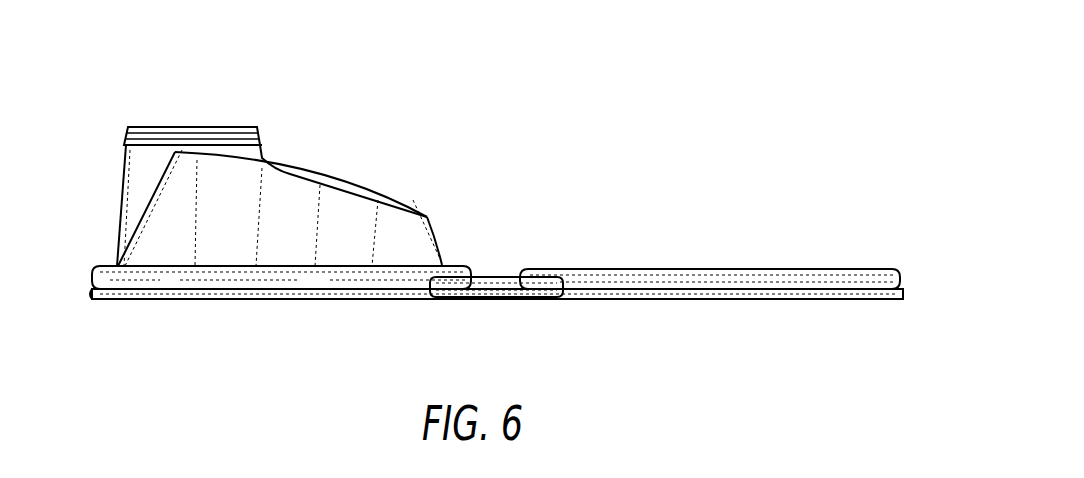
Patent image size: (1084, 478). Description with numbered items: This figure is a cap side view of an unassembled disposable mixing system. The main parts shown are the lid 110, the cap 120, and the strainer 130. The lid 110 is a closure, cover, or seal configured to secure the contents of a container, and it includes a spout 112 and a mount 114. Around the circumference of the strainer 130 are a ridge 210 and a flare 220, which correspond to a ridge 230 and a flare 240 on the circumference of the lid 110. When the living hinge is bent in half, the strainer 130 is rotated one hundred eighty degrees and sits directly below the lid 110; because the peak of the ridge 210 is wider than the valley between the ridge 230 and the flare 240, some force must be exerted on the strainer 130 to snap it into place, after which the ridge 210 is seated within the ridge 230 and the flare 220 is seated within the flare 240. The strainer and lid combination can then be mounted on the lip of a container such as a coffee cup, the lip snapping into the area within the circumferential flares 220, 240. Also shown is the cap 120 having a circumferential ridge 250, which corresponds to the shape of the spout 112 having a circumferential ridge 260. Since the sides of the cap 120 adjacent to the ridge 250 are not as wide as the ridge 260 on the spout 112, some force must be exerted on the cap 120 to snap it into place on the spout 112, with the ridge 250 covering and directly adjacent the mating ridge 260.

The lid 110 is at (375, 213).
The spout 112 is at (223, 128).
The mount 114 is at (411, 272).
The cap 120 is at (497, 281).
The strainer 130 is at (717, 269).
The ridge 210 is at (825, 277).
The flare 220 is at (897, 293).
The ridge 230 is at (150, 278).
The flare 240 is at (110, 293).
The circumferential ridge 250 is at (425, 295).
The circumferential ridge 260 is at (127, 137).